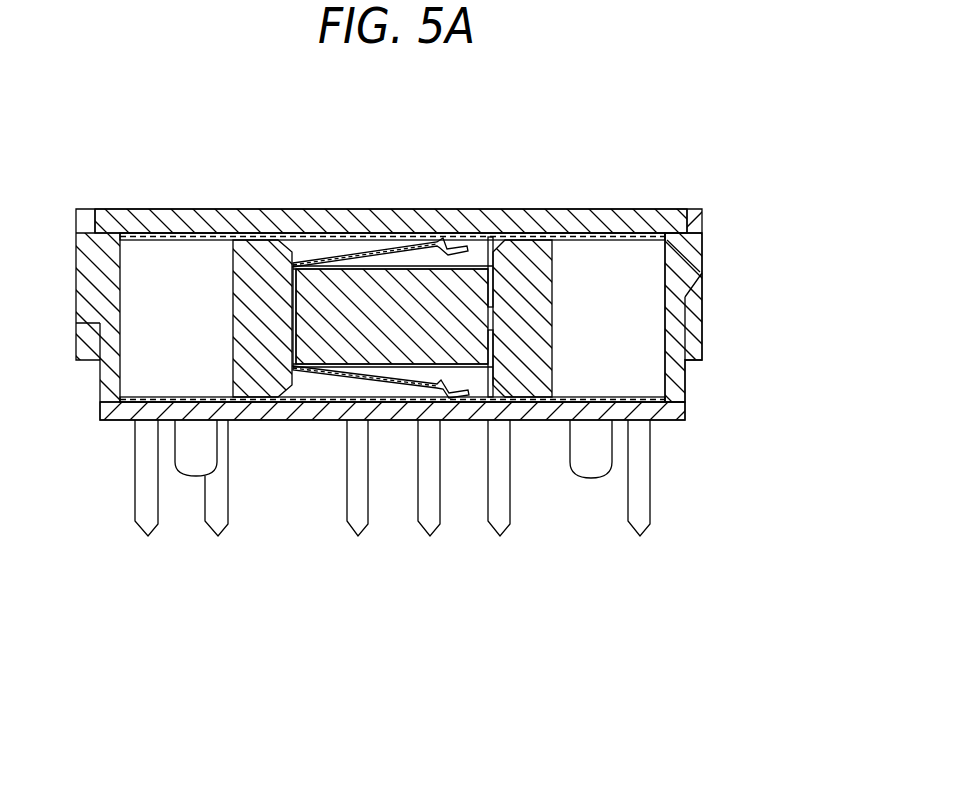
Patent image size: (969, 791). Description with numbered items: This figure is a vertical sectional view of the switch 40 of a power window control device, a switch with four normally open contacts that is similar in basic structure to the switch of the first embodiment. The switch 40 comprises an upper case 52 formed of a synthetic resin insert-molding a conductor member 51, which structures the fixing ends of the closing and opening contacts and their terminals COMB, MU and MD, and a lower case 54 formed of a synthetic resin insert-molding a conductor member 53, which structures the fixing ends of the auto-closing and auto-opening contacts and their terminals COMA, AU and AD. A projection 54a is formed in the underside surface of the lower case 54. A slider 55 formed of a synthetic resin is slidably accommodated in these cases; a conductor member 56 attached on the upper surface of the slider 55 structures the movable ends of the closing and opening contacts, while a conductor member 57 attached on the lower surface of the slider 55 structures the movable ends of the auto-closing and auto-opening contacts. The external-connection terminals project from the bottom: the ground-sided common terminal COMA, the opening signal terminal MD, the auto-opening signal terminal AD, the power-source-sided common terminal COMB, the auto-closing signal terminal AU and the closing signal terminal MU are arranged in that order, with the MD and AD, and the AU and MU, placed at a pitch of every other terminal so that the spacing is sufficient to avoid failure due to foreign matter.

The switch 40 is at (738, 208).
The conductor member 51 is at (613, 240).
The upper case 52 is at (613, 236).
The conductor member 53 is at (609, 397).
The lower case 54 is at (678, 377).
The projection 54a is at (600, 478).
The slider 55 is at (246, 308).
The conductor member 56 is at (381, 253).
The conductor member 57 is at (391, 378).
The ground-sided common terminal COMA is at (143, 538).
The opening signal terminal MD is at (218, 538).
The auto-opening signal terminal AD is at (360, 538).
The power-source-sided common terminal COMB is at (428, 538).
The auto-closing signal terminal AU is at (500, 538).
The closing signal terminal MU is at (640, 538).